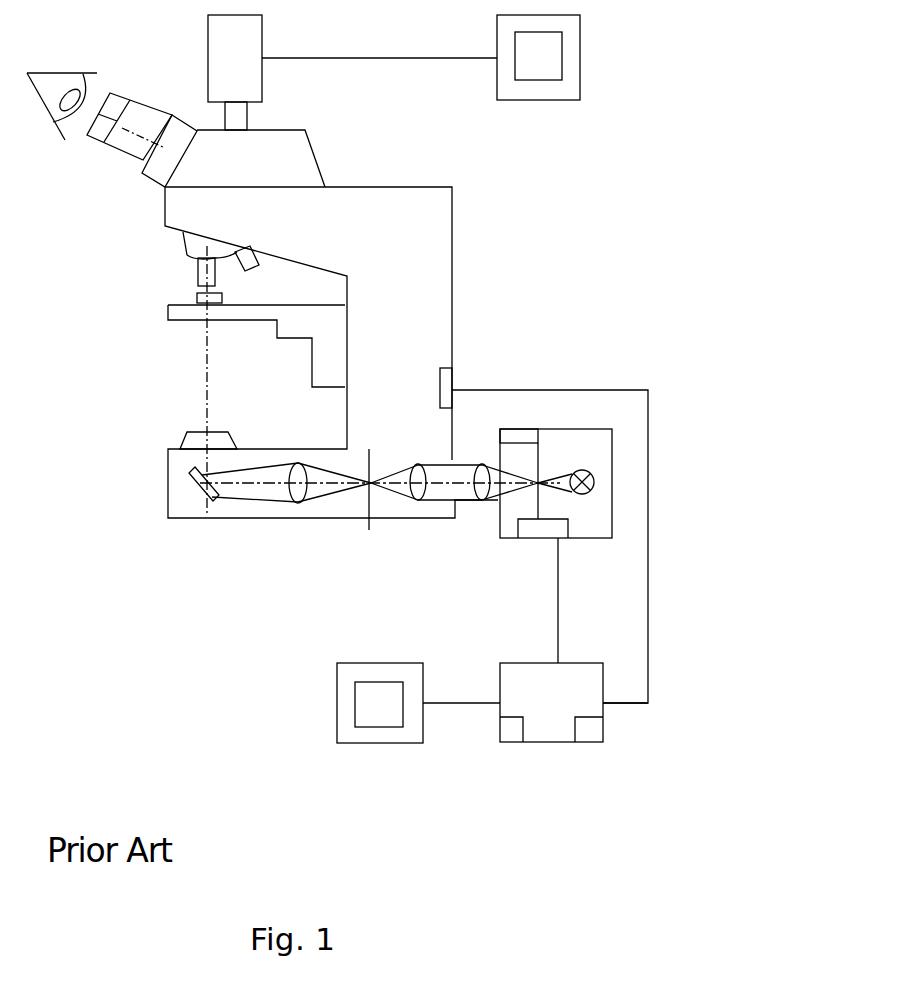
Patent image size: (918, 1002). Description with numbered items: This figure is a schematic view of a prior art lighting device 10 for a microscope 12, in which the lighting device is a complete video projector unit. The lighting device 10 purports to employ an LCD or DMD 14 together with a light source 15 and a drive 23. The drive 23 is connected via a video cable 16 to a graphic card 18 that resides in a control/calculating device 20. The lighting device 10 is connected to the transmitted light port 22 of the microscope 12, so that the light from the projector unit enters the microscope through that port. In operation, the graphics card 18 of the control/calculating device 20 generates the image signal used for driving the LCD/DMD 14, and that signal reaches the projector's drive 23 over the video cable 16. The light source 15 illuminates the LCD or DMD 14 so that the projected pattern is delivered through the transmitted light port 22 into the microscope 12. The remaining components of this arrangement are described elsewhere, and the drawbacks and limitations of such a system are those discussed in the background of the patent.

The prior art lighting device 10 is at (582, 428).
The microscope 12 is at (433, 227).
The LCD or DMD 14 is at (538, 448).
The light source 15 is at (594, 485).
The video cable 16 is at (560, 597).
The graphic card 18 is at (508, 742).
The control/calculating device 20 is at (557, 712).
The transmitted light port 22 is at (473, 508).
The drive 23 is at (532, 543).